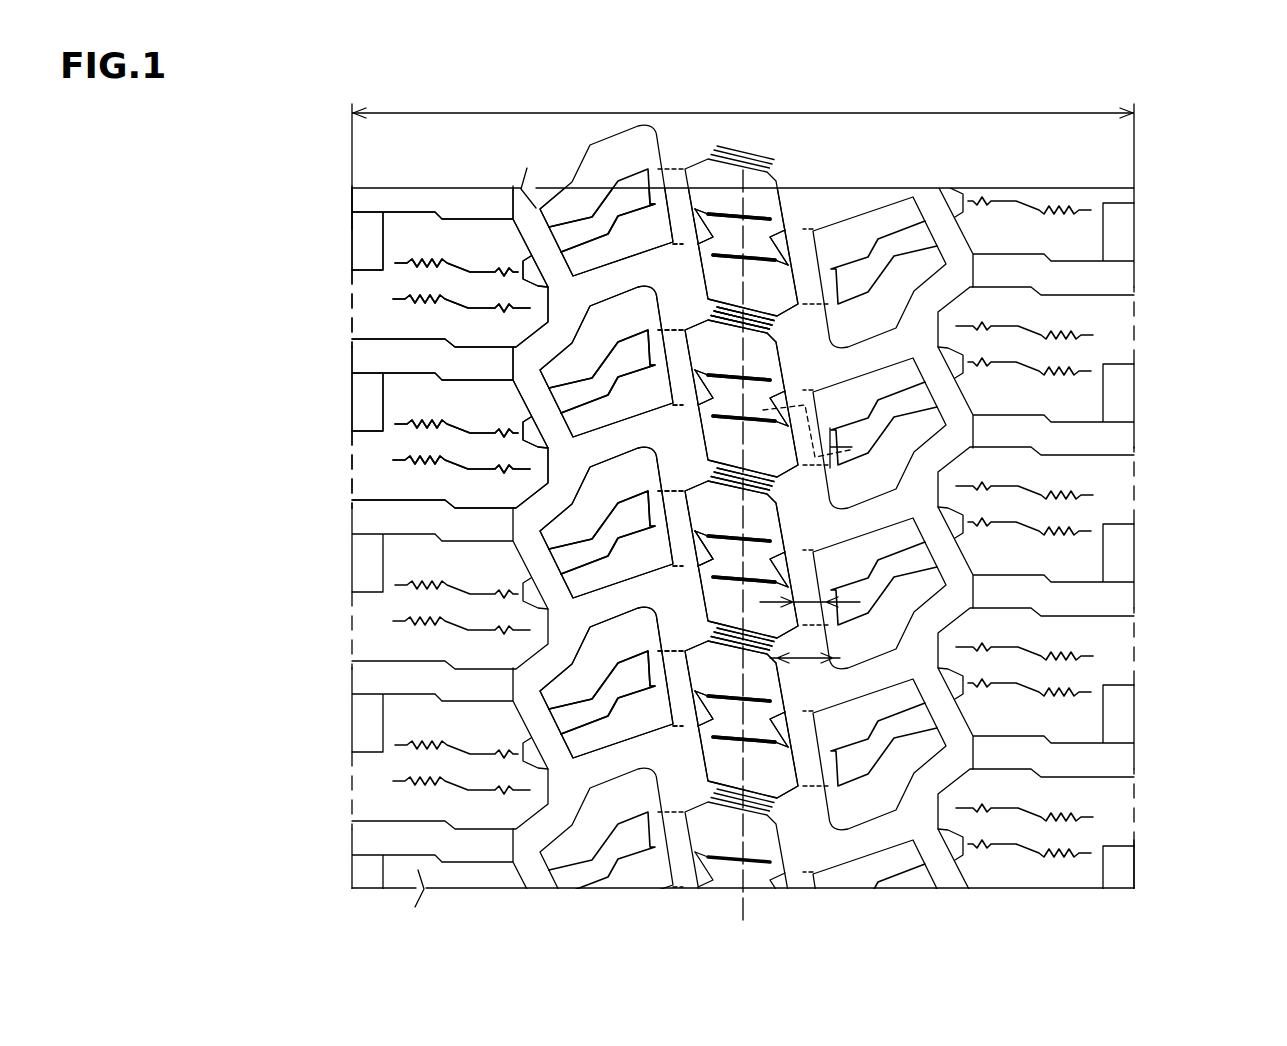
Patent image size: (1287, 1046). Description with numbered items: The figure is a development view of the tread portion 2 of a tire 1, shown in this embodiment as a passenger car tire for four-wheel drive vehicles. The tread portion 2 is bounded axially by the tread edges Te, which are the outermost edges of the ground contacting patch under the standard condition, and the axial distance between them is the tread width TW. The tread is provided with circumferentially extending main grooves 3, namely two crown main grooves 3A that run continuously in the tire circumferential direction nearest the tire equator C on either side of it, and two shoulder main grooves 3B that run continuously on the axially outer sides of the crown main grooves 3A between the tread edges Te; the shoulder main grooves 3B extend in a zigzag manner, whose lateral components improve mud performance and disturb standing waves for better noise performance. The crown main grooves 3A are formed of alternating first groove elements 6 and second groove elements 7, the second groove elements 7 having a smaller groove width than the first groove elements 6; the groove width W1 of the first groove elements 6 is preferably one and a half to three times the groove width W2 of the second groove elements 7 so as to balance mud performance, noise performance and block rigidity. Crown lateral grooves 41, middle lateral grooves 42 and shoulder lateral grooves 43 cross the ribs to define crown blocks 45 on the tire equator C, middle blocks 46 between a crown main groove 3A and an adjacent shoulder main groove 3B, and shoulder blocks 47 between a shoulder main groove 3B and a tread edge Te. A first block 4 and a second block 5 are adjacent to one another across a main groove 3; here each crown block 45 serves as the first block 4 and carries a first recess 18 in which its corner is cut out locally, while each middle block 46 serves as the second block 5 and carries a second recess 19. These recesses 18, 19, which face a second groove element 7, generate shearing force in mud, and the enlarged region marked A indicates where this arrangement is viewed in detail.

The tire 1 is at (1224, 155).
The tread portion 2 is at (1155, 176).
The main groove 3 is at (736, 893).
The crown main groove 3A is at (678, 856).
The shoulder main groove 3B is at (546, 827).
The first block 4 is at (725, 757).
The second block 5 is at (610, 737).
The first groove element 6 is at (680, 617).
The second groove element 7 is at (681, 528).
The first recess 18 is at (703, 710).
The second recess 19 is at (655, 672).
The crown lateral groove 41 is at (700, 307).
The middle lateral groove 42 is at (617, 444).
The shoulder lateral groove 43 is at (416, 362).
The crown block 45 is at (722, 351).
The middle block 46 is at (581, 355).
The shoulder block 47 is at (438, 250).
The tread edge Te is at (348, 215).
The tread width TW is at (743, 135).
The tire equator C is at (741, 531).
The groove width of first groove element W1 is at (808, 660).
The groove width of second groove element W2 is at (815, 604).
The section A is at (763, 410).